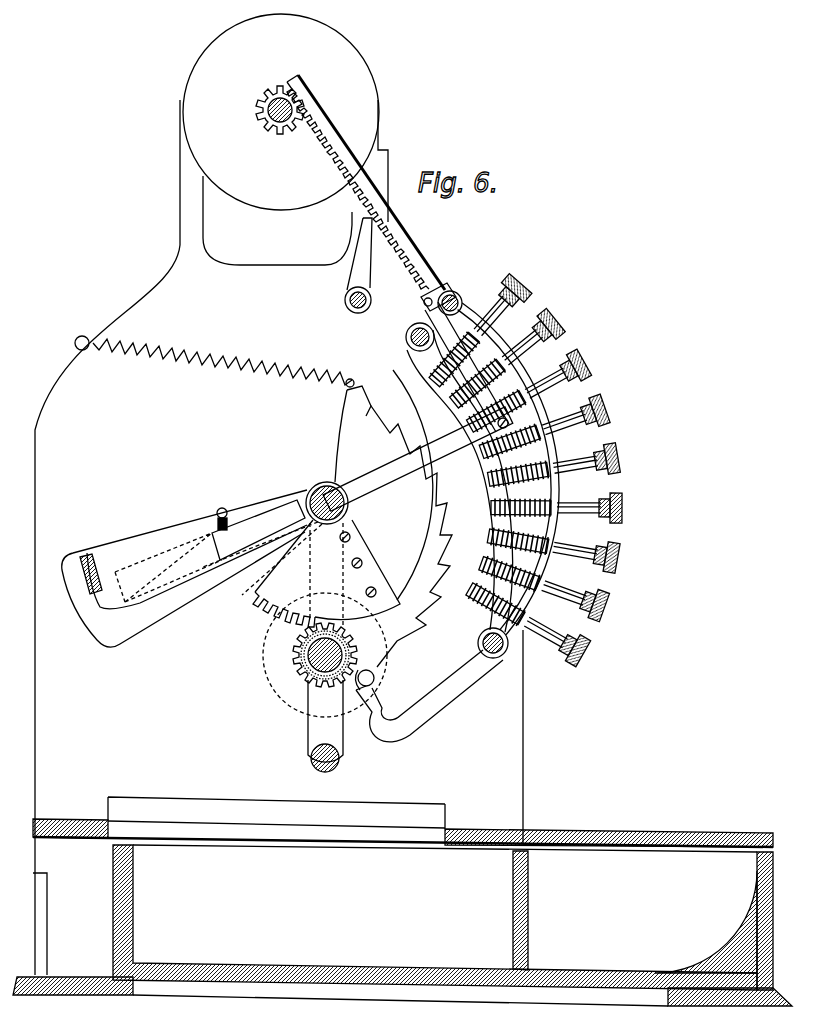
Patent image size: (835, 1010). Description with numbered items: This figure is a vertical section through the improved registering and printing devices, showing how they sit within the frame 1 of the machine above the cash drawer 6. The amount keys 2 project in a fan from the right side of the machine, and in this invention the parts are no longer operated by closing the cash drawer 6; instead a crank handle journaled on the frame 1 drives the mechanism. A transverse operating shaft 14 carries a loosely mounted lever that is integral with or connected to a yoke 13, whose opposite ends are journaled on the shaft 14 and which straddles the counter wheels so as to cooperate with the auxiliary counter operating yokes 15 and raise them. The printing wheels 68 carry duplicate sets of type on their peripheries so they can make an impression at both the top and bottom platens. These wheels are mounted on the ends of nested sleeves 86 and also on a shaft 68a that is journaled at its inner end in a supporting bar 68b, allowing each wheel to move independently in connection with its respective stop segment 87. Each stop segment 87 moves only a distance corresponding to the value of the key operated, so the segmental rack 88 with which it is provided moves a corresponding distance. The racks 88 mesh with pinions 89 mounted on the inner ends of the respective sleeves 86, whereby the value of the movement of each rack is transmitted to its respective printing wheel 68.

The frame 1 is at (476, 746).
The amount keys 2 is at (559, 329).
The cash drawer 6 is at (402, 901).
The yoke 13 is at (108, 549).
The transverse operating shaft 14 is at (325, 483).
The auxiliary counter operating yokes 15 is at (140, 590).
The printing wheels 68 is at (292, 692).
The shaft 68a is at (300, 681).
The supporting bar 68b is at (312, 722).
The nested sleeves 86 is at (306, 666).
The stop segments 87 is at (433, 514).
The segmental racks 88 is at (301, 618).
The pinions 89 is at (298, 656).